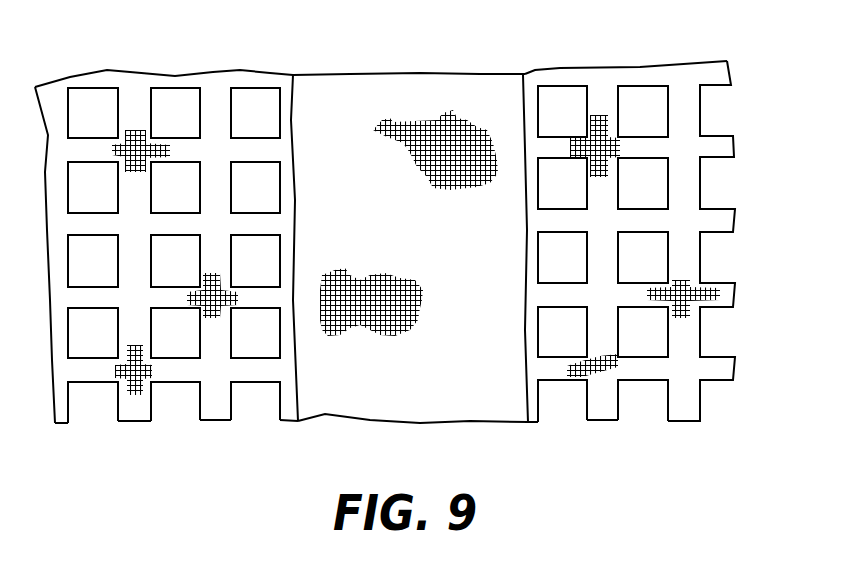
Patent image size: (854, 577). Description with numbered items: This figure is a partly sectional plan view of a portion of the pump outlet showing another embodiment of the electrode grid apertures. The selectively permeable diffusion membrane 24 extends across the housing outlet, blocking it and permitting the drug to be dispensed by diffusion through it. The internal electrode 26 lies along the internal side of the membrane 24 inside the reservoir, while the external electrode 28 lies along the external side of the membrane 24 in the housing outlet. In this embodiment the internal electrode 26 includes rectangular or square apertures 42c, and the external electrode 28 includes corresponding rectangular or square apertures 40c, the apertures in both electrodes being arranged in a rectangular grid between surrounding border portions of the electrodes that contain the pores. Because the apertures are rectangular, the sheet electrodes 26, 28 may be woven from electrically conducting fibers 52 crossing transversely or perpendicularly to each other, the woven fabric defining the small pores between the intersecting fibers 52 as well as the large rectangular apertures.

The external electrode 28 is at (213, 72).
The internal electrode 26 is at (603, 68).
The diffusion membrane 24 is at (427, 390).
The rectangular apertures 40c is at (168, 358).
The rectangular apertures 42c is at (640, 352).
The electrically conducting fibers 52 is at (135, 390).